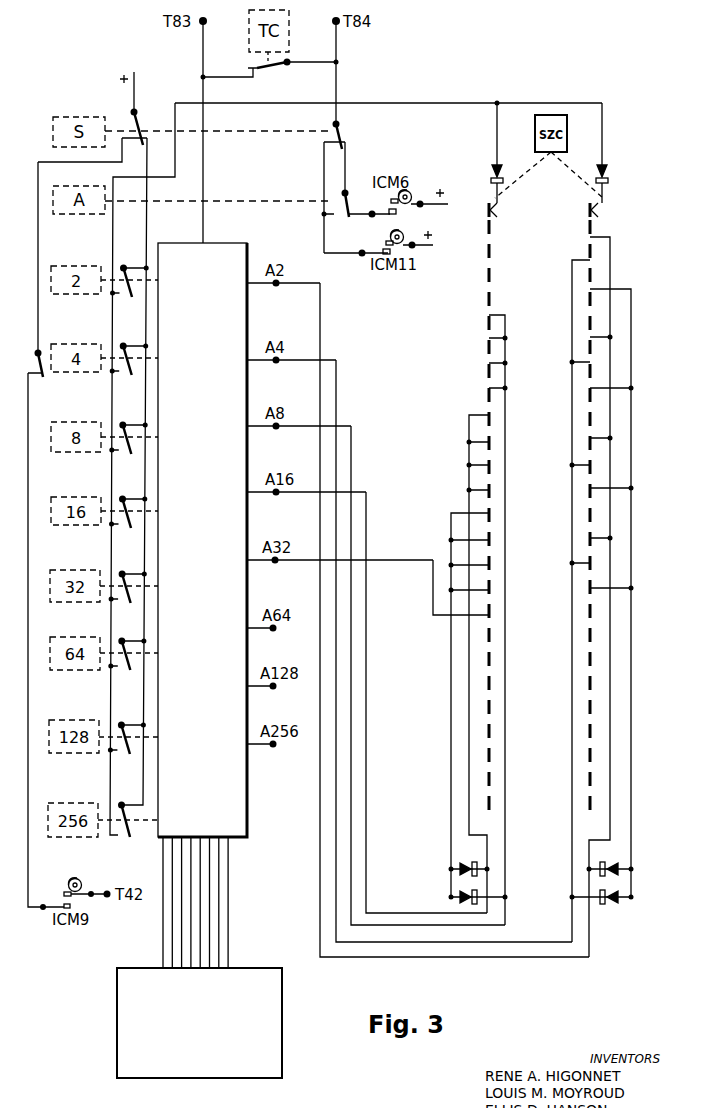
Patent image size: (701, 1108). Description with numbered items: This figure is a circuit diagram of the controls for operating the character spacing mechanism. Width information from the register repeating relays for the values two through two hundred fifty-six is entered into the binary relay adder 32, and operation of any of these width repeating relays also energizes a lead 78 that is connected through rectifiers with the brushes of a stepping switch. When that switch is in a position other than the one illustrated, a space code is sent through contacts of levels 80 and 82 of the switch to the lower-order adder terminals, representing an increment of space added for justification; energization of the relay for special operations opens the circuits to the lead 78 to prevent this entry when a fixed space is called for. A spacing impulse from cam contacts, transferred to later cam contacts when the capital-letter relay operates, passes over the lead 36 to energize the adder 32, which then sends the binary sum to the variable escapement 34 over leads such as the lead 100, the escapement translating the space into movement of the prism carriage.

The binary relay adder 32 is at (194, 508).
The variable escapement 34 is at (187, 1036).
The lead 36 is at (206, 178).
The lead 78 is at (405, 104).
The level of switch SZC 80 is at (492, 263).
The level of switch SZC 82 is at (586, 240).
The lead 100 is at (213, 938).